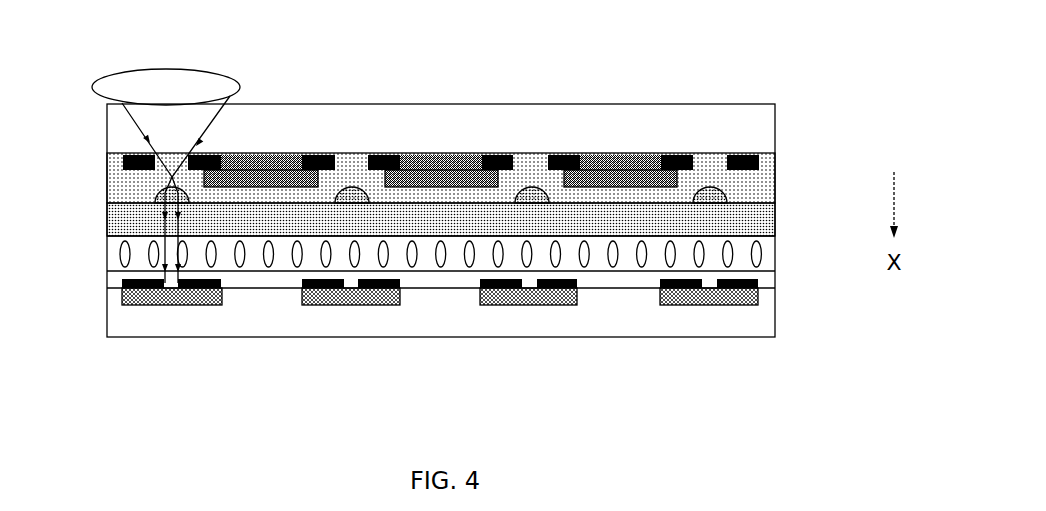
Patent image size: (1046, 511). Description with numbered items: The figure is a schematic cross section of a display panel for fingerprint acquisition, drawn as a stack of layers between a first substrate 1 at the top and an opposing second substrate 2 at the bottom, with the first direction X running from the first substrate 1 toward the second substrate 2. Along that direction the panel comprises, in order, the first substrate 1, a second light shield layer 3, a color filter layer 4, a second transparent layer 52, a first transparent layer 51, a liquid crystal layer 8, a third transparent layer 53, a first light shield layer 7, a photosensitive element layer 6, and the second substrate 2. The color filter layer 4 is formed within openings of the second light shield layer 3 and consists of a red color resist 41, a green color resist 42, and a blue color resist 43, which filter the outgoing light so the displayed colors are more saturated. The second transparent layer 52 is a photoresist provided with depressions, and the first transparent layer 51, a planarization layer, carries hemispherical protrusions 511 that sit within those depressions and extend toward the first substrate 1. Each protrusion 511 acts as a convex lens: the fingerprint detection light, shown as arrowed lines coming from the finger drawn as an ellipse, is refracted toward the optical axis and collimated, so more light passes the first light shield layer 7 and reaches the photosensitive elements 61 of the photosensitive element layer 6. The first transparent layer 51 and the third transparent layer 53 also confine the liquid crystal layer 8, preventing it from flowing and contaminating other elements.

The first substrate 1 is at (107, 128).
The second substrate 2 is at (775, 323).
The second light shield layer 3 is at (762, 155).
The color filter layer 4 is at (524, 118).
The red color resist 41 is at (263, 165).
The green color resist 42 is at (455, 167).
The blue color resist 43 is at (610, 167).
The first transparent layer 51 is at (107, 218).
The protrusions 511 is at (353, 187).
The second transparent layer 52 is at (107, 180).
The third transparent layer 53 is at (107, 278).
The photosensitive element layer 6 is at (392, 349).
The photosensitive elements 61 is at (360, 300).
The first light shield layer 7 is at (757, 283).
The liquid crystal layer 8 is at (107, 255).